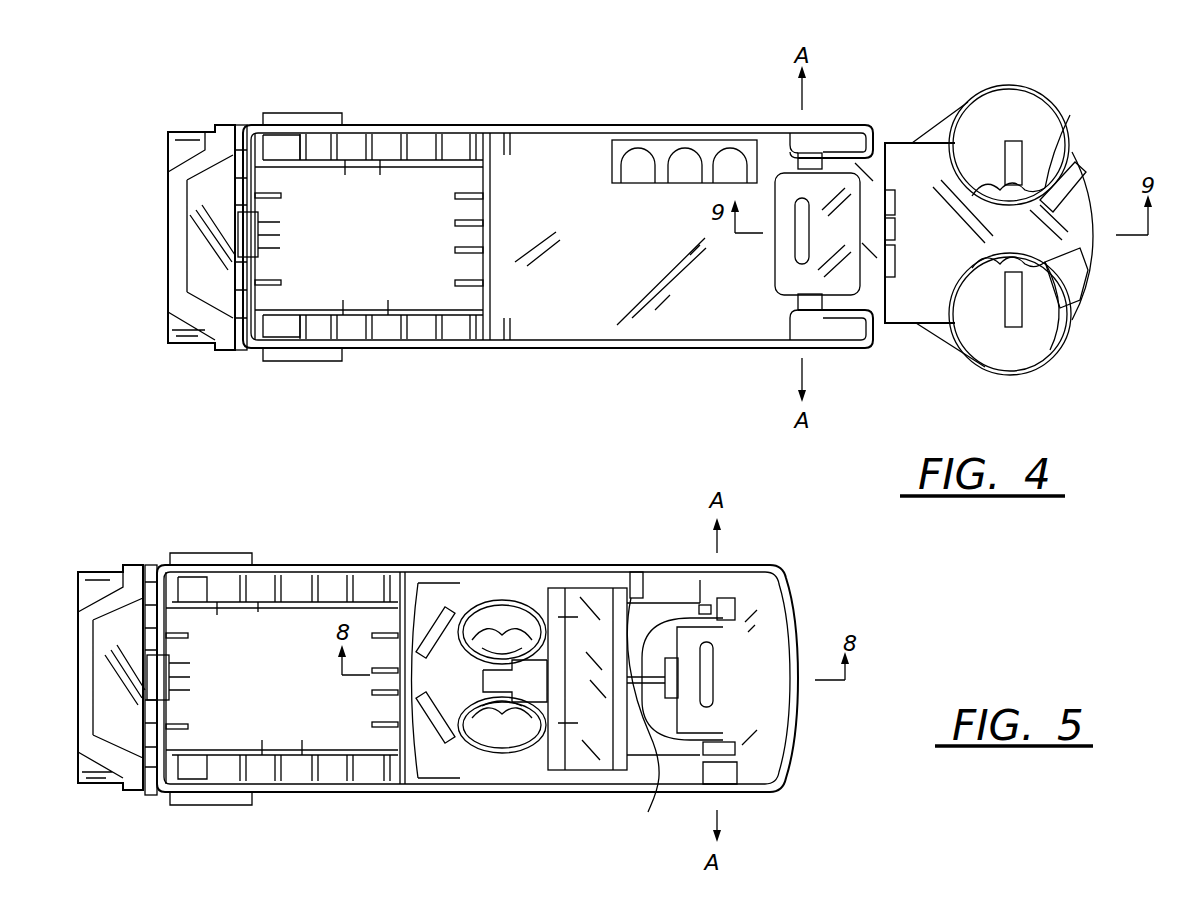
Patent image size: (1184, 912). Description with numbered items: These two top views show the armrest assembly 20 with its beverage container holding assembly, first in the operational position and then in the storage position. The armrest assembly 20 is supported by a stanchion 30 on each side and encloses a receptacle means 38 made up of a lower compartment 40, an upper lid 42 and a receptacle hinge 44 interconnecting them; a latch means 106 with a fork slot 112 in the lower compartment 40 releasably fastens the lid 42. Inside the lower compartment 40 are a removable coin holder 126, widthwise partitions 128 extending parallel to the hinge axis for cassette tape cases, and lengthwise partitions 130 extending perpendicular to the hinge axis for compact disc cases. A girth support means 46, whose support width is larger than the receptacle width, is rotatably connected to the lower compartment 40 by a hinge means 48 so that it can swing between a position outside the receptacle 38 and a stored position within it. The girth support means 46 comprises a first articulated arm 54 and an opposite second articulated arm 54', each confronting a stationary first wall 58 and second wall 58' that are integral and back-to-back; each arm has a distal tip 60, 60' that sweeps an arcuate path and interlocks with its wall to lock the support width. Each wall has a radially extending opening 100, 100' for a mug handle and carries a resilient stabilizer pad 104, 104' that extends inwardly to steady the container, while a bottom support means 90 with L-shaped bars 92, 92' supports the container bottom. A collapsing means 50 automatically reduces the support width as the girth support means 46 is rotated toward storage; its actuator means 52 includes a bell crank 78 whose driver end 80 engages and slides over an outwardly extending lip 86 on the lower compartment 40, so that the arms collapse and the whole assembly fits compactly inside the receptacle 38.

In FIG. 4, the armrest assembly 20 is at (465, 95).
In FIG. 5, the armrest assembly 20 is at (143, 523).
In FIG. 4, the stanchion 30 is at (320, 112).
In FIG. 5, the stanchion 30 is at (222, 553).
In FIG. 4, the receptacle means 38 is at (587, 120).
In FIG. 5, the receptacle means 38 is at (355, 560).
In FIG. 4, the lower compartment 40 is at (402, 128).
In FIG. 5, the lower compartment 40 is at (323, 565).
In FIG. 4, the upper lid 42 is at (187, 128).
In FIG. 5, the upper lid 42 is at (95, 585).
In FIG. 4, the receptacle hinge 44 is at (238, 124).
In FIG. 5, the receptacle hinge 44 is at (152, 578).
In FIG. 4, the girth support means 46 is at (1032, 80).
In FIG. 5, the girth support means 46 is at (508, 595).
In FIG. 4, the hinge means 48 is at (800, 150).
In FIG. 5, the hinge means 48 is at (735, 605).
In FIG. 4, the collapsing means 50 is at (900, 215).
In FIG. 5, the collapsing means 50 is at (695, 670).
In FIG. 5, the actuator means 52 is at (630, 655).
In FIG. 4, the first articulated arm 54 is at (1010, 335).
In FIG. 5, the first articulated arm 54 is at (498, 779).
In FIG. 4, the second articulated arm 54' is at (1007, 124).
In FIG. 5, the second articulated arm 54' is at (526, 584).
In FIG. 4, the first wall 58 is at (1101, 299).
In FIG. 5, the first wall 58 is at (429, 765).
In FIG. 4, the second stationary wall 58' is at (1085, 140).
In FIG. 5, the second stationary wall 58' is at (440, 573).
In FIG. 5, the distal tip 60 is at (502, 579).
In FIG. 5, the distal tip of second arm 60' is at (487, 738).
In FIG. 5, the bell crank 78 is at (642, 716).
In FIG. 4, the driver end 80 is at (895, 258).
In FIG. 5, the driver end 80 is at (682, 700).
In FIG. 4, the lip 86 is at (880, 340).
In FIG. 5, the lip 86 is at (800, 620).
In FIG. 4, the bottom support means 90 is at (1005, 330).
In FIG. 5, the bottom support means 90 is at (575, 762).
In FIG. 4, the L-shaped bar 92 is at (993, 299).
In FIG. 5, the L-shaped bar 92 is at (581, 677).
In FIG. 4, the second L-shaped bar 92' is at (992, 154).
In FIG. 4, the radially extending opening 100 is at (1120, 278).
In FIG. 5, the radially extending opening 100 is at (490, 681).
In FIG. 4, the second radially extending opening 100' is at (1118, 184).
In FIG. 5, the second radially extending opening 100' is at (491, 629).
In FIG. 4, the resilient stabilizer pad 104 is at (1041, 317).
In FIG. 5, the resilient stabilizer pad 104 is at (514, 769).
In FIG. 4, the second stabilizer pad 104' is at (1055, 111).
In FIG. 5, the second stabilizer pad 104' is at (553, 596).
In FIG. 4, the latch means 106 is at (282, 240).
In FIG. 5, the latch means 106 is at (178, 678).
In FIG. 4, the fork slot 112 is at (812, 236).
In FIG. 5, the fork slot 112 is at (708, 683).
In FIG. 4, the removable coin holder 126 is at (652, 185).
In FIG. 5, the removable coin holder 126 is at (634, 585).
In FIG. 4, the widthwise partitions 128 is at (397, 160).
In FIG. 5, the widthwise partitions 128 is at (272, 602).
In FIG. 4, the lengthwise partitions 130 is at (282, 235).
In FIG. 5, the lengthwise partitions 130 is at (192, 722).